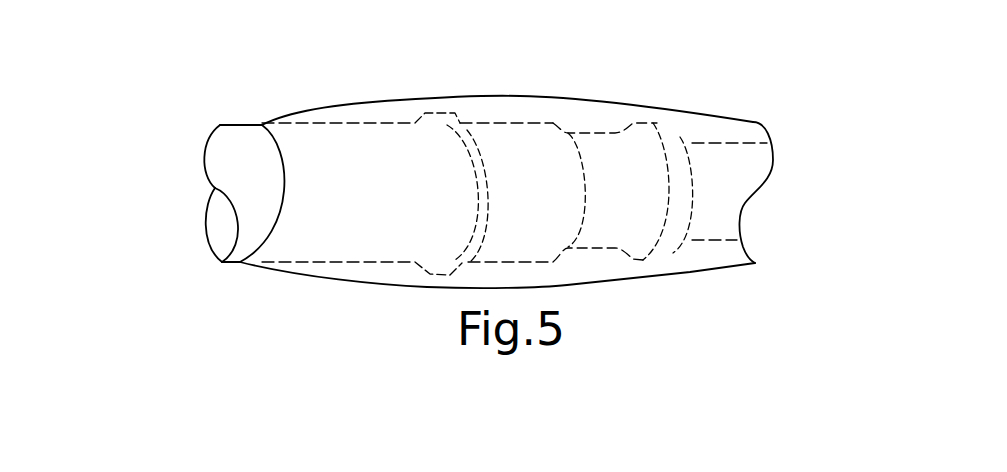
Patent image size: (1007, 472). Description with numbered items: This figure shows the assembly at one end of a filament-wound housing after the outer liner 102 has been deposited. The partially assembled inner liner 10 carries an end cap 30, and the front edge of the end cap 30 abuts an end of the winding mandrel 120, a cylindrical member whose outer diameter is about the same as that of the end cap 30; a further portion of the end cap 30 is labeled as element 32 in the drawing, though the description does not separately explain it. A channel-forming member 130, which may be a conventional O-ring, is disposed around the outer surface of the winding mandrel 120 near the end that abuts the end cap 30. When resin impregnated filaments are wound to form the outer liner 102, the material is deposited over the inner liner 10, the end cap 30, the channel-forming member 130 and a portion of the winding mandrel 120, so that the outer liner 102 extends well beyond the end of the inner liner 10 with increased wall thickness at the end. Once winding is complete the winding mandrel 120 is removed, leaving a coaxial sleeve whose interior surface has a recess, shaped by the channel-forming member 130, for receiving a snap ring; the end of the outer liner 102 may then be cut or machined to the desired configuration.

The inner liner 10 is at (738, 148).
The end cap 30 is at (527, 147).
The flange 32 is at (670, 147).
The outer liner 102 is at (592, 110).
The winding mandrel 120 is at (308, 147).
The channel-forming member 130 is at (460, 123).